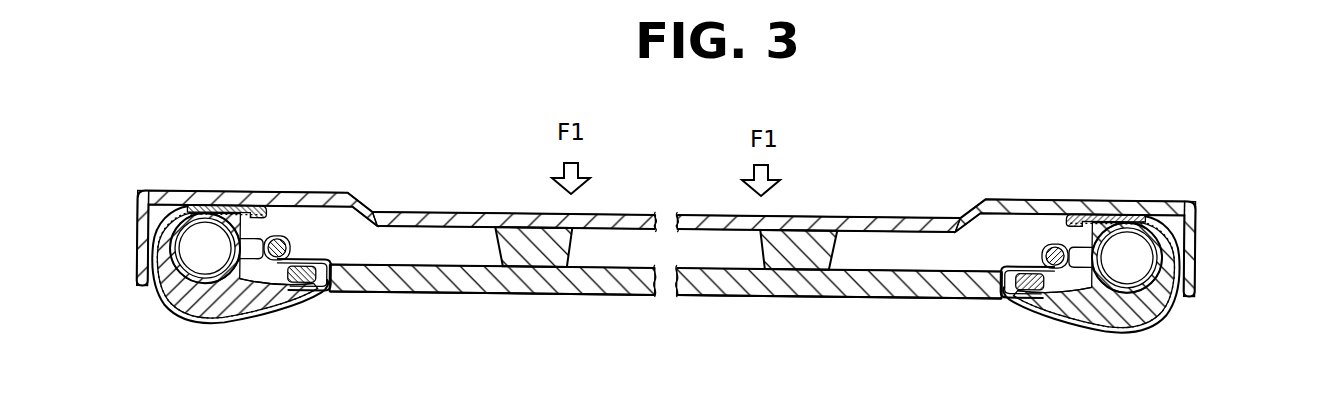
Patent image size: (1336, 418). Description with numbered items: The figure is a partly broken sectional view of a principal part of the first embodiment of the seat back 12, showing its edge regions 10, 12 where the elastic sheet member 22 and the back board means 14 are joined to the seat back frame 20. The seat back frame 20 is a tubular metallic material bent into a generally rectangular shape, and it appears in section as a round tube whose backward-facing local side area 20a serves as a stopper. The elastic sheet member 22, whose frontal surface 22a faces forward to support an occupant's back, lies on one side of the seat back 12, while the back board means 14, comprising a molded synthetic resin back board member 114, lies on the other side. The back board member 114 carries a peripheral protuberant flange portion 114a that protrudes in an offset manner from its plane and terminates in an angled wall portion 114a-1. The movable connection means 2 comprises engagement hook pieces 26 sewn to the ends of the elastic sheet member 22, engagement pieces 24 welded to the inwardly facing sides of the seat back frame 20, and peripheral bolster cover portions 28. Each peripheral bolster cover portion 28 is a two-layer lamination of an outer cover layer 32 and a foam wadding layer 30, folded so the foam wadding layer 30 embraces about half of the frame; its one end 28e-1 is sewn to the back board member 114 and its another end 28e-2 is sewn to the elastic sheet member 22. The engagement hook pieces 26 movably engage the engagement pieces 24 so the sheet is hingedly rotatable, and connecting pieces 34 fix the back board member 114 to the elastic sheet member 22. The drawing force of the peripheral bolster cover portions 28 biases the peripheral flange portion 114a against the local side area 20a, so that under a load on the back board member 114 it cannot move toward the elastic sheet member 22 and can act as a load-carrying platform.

The movable connection means 2 is at (302, 229).
The left edge portion of panel assembly 10 is at (340, 148).
The seat back 12 is at (1245, 143).
The back board means 14 is at (865, 160).
The seat back frame 20 is at (240, 279).
The local side area 20a is at (200, 215).
The elastic sheet member 22 is at (520, 293).
The frontal surface 22a is at (463, 294).
The engagement piece 24 is at (290, 250).
The engagement hook piece 26 is at (274, 240).
The peripheral bolster cover portion 28 is at (190, 332).
The one end of the peripheral bolster cover portion 28e-1 is at (268, 207).
The another end of the peripheral bolster cover portion 28e-2 is at (318, 292).
The foam wadding layer 30 is at (227, 317).
The outer cover layer 32 is at (163, 313).
The connecting piece 34 is at (537, 238).
The back board member 114 is at (377, 211).
The peripheral protuberant flange portion 114a is at (187, 192).
The angled wall portion 114a-1 is at (137, 233).